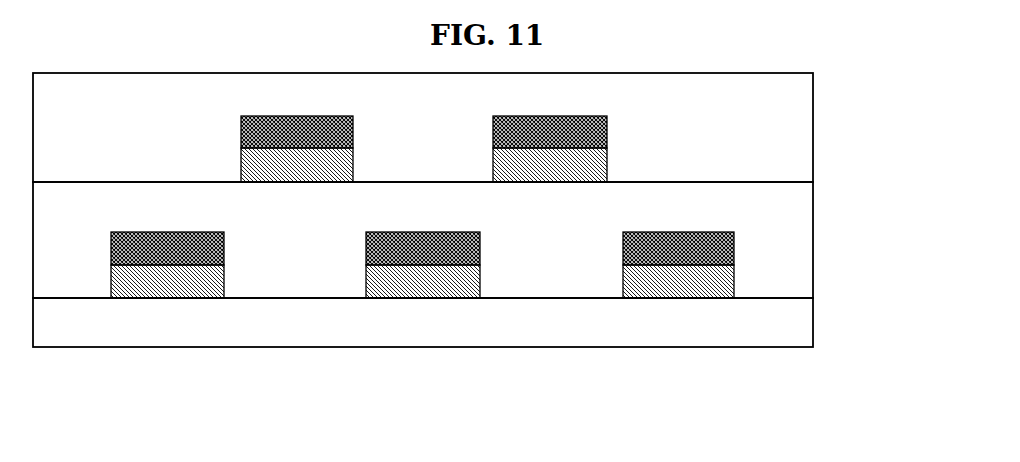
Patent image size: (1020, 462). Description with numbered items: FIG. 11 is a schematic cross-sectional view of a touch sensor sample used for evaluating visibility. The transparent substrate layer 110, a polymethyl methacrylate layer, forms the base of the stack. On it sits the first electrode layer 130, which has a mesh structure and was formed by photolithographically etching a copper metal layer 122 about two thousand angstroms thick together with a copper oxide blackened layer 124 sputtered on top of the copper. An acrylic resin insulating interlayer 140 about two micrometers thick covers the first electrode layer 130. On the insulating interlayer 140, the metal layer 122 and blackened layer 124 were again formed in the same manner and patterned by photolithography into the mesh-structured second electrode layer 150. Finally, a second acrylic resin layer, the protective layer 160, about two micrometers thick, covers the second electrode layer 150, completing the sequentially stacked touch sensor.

The transparent substrate layer 110 is at (787, 328).
The metal layer 122 is at (624, 285).
The blackened layer 124 is at (622, 250).
The first electrode layer 130 is at (513, 323).
The insulating interlayer 140 is at (783, 210).
The second electrode layer 150 is at (622, 144).
The protective layer 160 is at (783, 95).